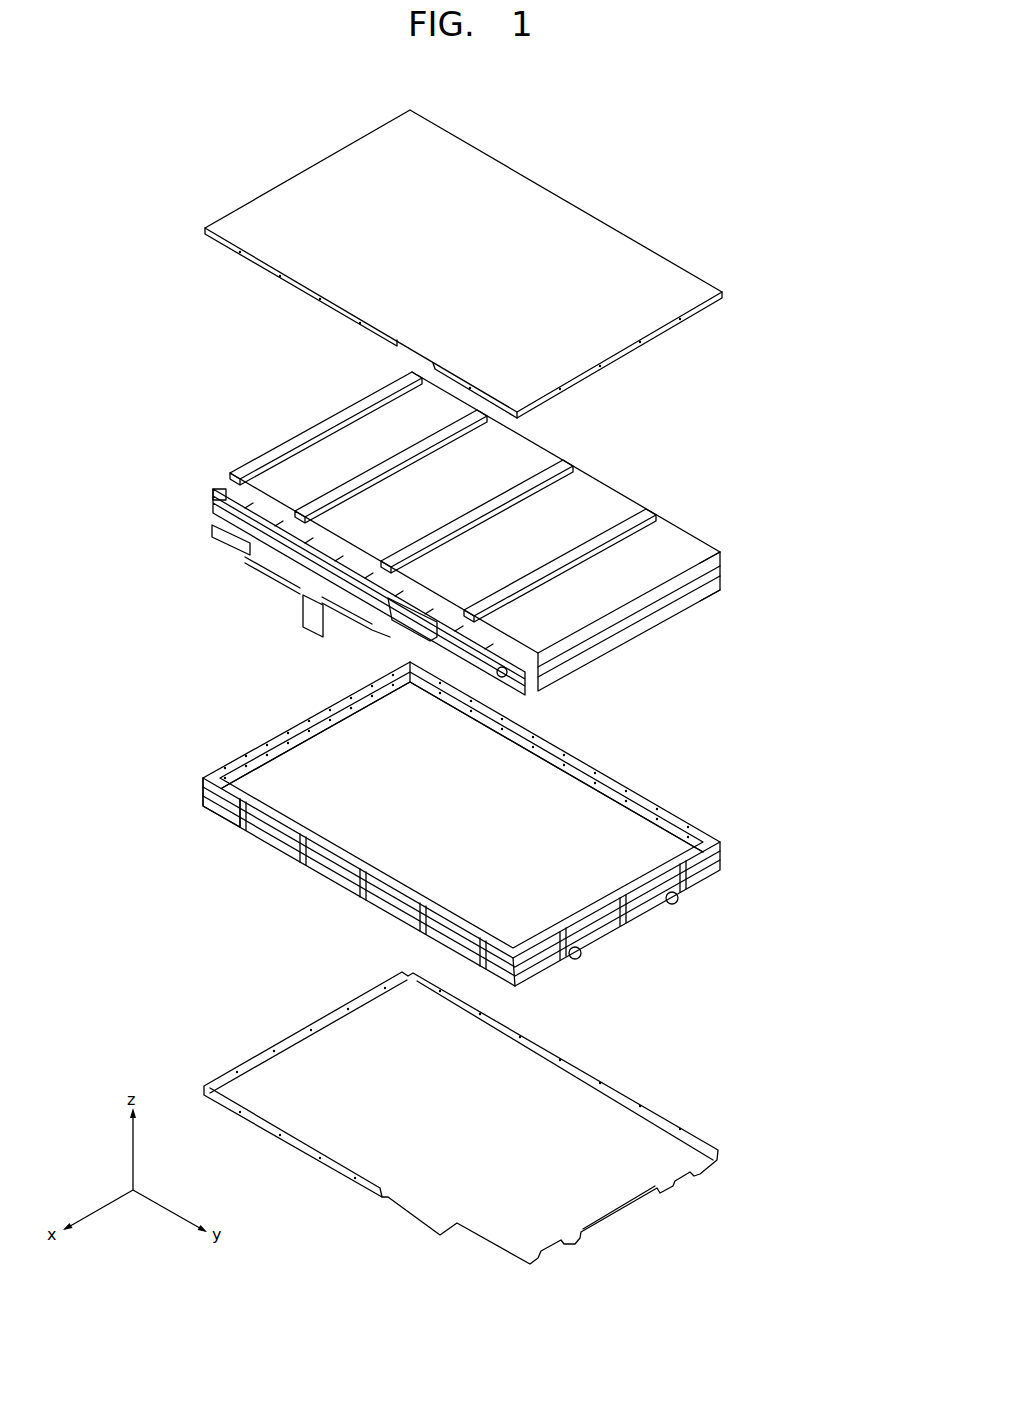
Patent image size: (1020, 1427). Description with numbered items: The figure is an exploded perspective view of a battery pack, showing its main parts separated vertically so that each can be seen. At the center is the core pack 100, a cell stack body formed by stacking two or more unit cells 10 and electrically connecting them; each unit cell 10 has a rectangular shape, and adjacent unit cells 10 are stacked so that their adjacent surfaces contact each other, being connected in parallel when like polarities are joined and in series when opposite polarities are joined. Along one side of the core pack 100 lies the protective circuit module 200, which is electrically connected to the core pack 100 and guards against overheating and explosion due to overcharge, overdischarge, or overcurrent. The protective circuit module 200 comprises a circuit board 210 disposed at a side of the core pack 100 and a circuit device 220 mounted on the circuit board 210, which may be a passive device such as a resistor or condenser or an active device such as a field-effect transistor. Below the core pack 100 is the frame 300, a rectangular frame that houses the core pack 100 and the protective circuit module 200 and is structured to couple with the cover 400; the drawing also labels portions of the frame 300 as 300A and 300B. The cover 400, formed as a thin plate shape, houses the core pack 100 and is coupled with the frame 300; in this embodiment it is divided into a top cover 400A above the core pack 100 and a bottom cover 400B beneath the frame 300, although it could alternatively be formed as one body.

The unit cell 10 is at (675, 535).
The core pack 100 is at (278, 436).
The protective circuit module 200 is at (289, 564).
The circuit board 210 is at (213, 495).
The circuit device 220 is at (423, 627).
The frame 300 is at (207, 777).
The tray bottom plate 300A is at (387, 753).
The tray side wall 300B is at (225, 772).
The cover 400 is at (828, 357).
The top cover 400A is at (643, 305).
The bottom cover 400B is at (677, 1143).